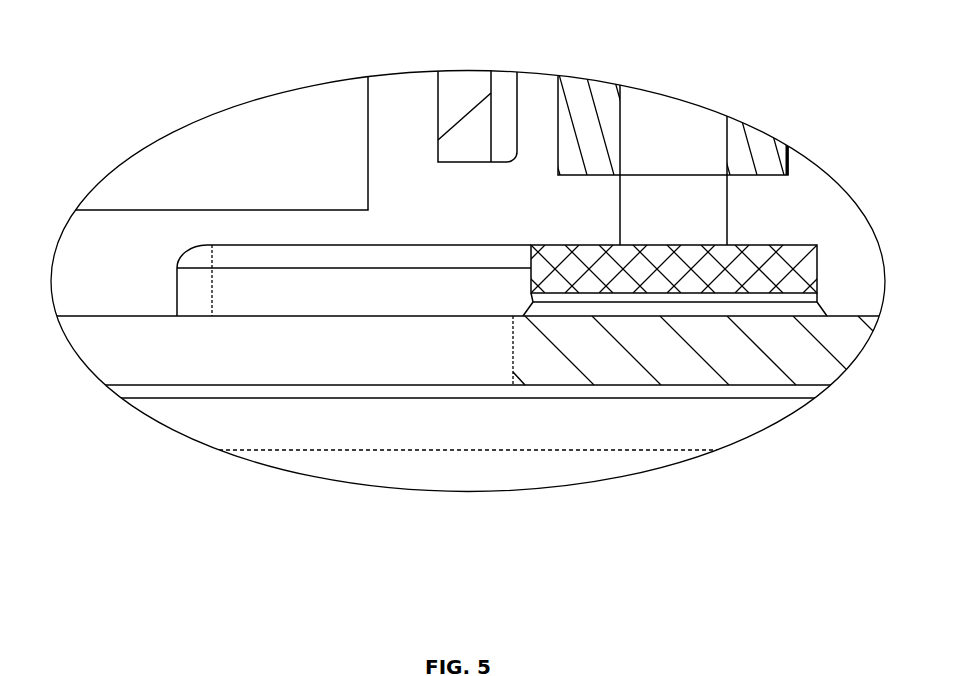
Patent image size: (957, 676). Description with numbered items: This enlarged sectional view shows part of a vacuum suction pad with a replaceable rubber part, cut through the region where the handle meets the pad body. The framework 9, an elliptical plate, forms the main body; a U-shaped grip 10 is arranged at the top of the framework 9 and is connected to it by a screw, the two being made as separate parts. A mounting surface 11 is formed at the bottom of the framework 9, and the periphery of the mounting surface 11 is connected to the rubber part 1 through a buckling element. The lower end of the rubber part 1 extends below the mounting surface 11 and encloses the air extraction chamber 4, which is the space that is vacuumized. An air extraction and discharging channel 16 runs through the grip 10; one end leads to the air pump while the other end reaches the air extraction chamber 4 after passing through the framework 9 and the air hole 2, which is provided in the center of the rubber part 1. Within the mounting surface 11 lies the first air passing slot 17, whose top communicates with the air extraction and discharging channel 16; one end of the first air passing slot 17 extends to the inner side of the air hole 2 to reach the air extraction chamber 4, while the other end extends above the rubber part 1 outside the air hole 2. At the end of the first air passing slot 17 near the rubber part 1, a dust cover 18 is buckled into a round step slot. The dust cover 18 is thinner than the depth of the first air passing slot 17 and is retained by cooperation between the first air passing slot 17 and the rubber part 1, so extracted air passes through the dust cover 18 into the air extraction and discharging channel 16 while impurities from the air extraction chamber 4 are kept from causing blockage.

The rubber part 1 is at (677, 353).
The air hole 2 is at (472, 363).
The air extraction chamber 4 is at (575, 433).
The framework 9 is at (238, 232).
The grip 10 is at (480, 143).
The mounting surface 11 is at (138, 317).
The air extraction and discharging channel 16 is at (667, 157).
The first air passing slot 17 is at (330, 293).
The dust cover 18 is at (770, 245).